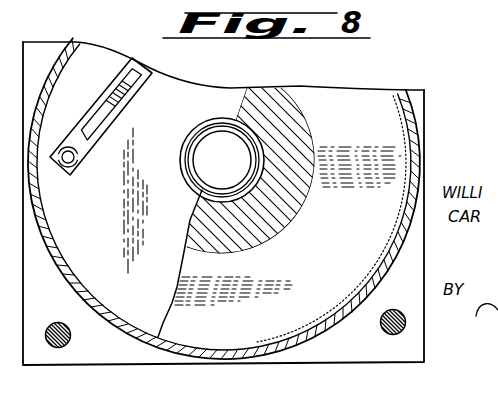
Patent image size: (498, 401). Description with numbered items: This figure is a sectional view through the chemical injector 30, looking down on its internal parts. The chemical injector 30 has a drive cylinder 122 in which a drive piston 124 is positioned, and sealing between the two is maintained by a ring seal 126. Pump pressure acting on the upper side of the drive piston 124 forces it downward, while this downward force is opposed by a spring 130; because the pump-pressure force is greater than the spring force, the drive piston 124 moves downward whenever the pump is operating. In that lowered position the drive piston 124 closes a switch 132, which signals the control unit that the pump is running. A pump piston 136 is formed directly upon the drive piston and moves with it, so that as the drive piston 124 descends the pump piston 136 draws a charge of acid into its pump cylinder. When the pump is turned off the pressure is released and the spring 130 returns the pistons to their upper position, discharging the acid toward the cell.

The chemical injector 30 is at (422, 88).
The drive cylinder 122 is at (403, 124).
The drive piston 124 is at (367, 108).
The ring seal 126 is at (411, 138).
The spring 130 is at (202, 190).
The switch 132 is at (112, 94).
The pump piston 136 is at (278, 100).